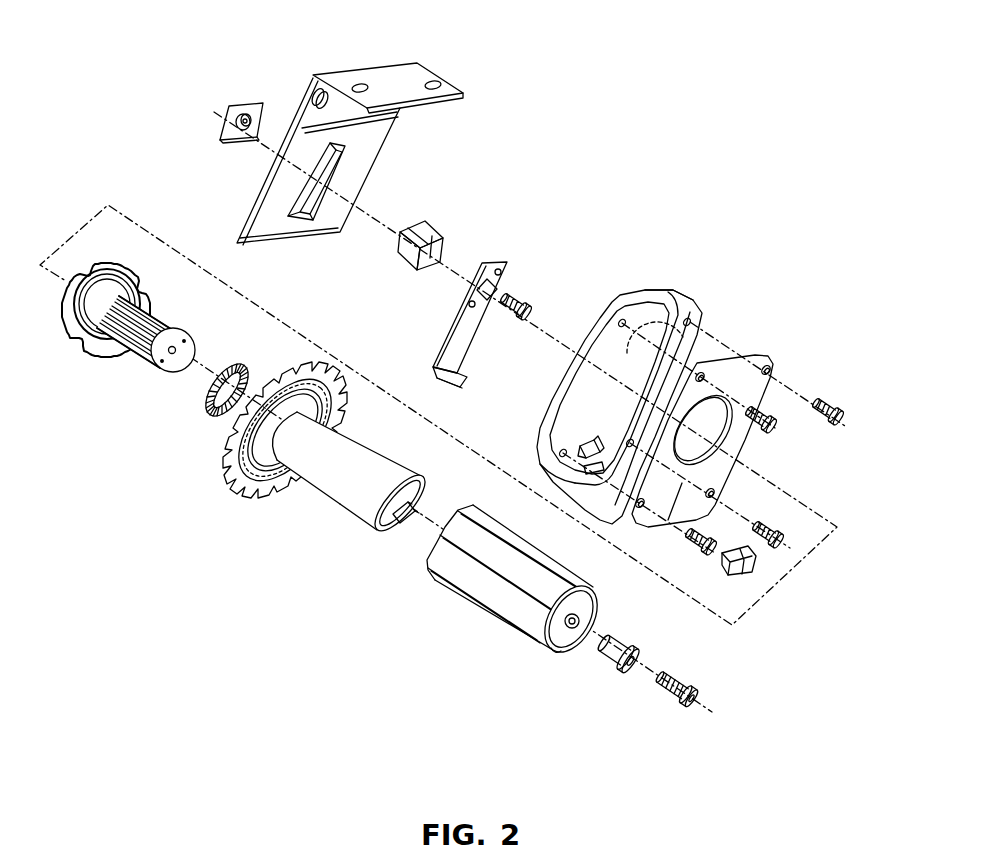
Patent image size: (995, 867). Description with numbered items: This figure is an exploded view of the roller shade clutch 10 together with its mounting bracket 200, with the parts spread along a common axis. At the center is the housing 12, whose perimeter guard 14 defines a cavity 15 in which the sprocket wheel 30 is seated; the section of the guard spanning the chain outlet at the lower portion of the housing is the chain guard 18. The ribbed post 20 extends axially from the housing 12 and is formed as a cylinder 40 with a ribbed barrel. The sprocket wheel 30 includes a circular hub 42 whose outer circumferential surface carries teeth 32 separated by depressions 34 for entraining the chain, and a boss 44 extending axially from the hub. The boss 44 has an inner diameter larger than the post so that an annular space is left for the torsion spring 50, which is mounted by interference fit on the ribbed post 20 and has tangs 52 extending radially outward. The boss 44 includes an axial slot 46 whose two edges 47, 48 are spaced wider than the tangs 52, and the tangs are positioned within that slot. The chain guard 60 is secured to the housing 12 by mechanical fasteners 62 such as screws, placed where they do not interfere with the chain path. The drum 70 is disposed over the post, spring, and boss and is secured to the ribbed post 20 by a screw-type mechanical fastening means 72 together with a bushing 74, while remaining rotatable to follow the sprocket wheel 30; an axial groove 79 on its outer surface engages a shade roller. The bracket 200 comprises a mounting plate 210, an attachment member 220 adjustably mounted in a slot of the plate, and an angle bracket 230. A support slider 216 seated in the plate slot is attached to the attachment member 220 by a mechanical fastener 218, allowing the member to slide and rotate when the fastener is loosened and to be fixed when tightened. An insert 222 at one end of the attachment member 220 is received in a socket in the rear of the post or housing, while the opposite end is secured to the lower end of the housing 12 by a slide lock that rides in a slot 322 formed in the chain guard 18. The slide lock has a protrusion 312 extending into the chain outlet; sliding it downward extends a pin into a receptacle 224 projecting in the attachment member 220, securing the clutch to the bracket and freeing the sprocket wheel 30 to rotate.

The roller shade clutch 10 is at (636, 264).
The housing 12 is at (571, 388).
The guard 14 is at (560, 472).
The cavity 15 is at (694, 304).
The chain guard 18 is at (589, 462).
The ribbed post 20 is at (163, 308).
The sprocket wheel 30 is at (288, 522).
The teeth 32 is at (248, 493).
The depressions 34 is at (254, 500).
The cylinder 40 is at (330, 416).
The circular hub 42 is at (333, 372).
The boss 44 is at (370, 467).
The axial slot 46 is at (393, 520).
The slot edge 47 is at (363, 513).
The slot edge 48 is at (406, 500).
The torsion spring 50 is at (232, 372).
The tangs 52 is at (214, 414).
The chain guard 60 is at (650, 524).
The mechanical fasteners 62 is at (824, 401).
The drum 70 is at (553, 573).
The mechanical fastening means 72 is at (684, 688).
The bushing 74 is at (616, 654).
The axial groove 79 is at (556, 651).
The bracket 200 is at (288, 75).
The mounting plate 210 is at (283, 228).
The support slider 216 is at (217, 131).
The mechanical fastener 218 is at (515, 300).
The attachment member 220 is at (452, 322).
The insert 222 is at (408, 270).
The receptacle 224 is at (460, 384).
The angle bracket 230 is at (413, 85).
The protrusion 312 is at (723, 560).
The slot 322 is at (590, 470).